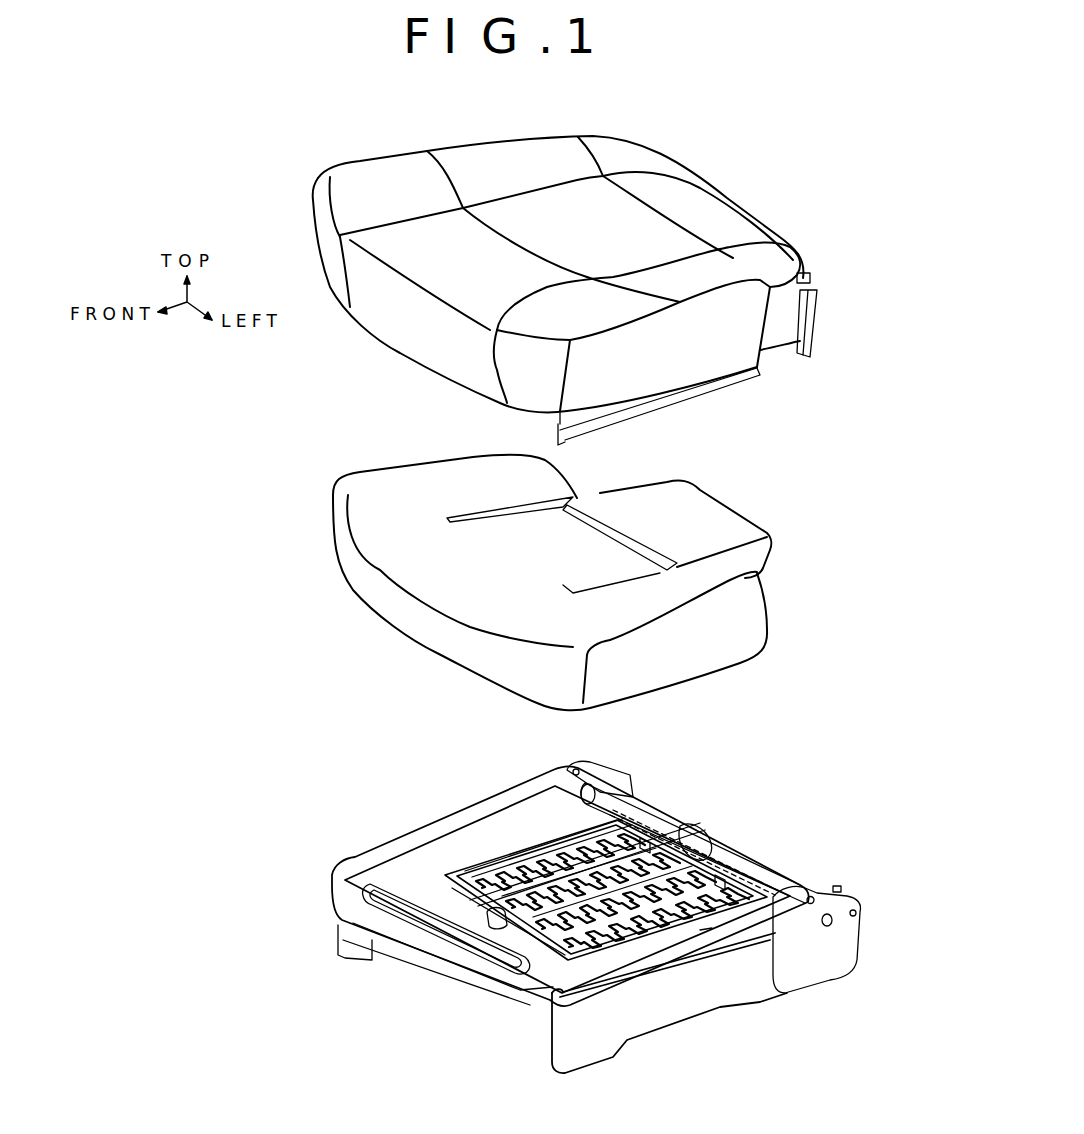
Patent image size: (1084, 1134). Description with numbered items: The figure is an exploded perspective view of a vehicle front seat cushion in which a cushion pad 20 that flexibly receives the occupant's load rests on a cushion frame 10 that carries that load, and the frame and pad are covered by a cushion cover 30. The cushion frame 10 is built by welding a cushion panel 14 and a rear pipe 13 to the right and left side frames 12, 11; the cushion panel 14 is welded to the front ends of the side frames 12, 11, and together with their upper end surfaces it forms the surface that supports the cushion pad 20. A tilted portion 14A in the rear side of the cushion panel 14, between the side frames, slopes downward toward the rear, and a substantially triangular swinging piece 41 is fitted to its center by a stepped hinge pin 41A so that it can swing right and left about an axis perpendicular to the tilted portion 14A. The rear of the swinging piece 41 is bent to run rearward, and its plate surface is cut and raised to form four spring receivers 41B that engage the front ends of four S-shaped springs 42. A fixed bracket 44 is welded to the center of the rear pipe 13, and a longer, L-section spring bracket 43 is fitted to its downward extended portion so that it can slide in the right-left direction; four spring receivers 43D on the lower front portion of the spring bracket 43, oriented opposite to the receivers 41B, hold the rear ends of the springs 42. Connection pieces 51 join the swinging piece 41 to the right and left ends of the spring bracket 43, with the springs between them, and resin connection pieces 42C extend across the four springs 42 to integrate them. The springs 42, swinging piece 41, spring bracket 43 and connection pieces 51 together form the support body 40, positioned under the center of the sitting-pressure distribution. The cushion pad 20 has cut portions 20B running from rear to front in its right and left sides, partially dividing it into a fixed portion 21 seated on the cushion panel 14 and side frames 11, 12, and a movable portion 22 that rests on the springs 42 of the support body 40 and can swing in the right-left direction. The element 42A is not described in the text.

The cushion frame 10 is at (566, 902).
The left side frame 11 is at (633, 1018).
The right side frame 12 is at (467, 827).
The rear pipe 13 is at (603, 793).
The cushion panel 14 is at (340, 863).
The tilted portion 14A is at (527, 943).
The cushion pad 20 is at (496, 559).
The cut portions 20B is at (600, 580).
The fixed portion 21 is at (393, 498).
The movable portion 22 is at (710, 513).
The cushion cover 30 is at (353, 200).
The support body 40 is at (591, 896).
The swinging piece 41 is at (440, 873).
The stepped hinge pin 41A is at (493, 937).
The spring receivers 41B is at (493, 877).
The S-shaped springs 42 is at (587, 830).
The connector 42A is at (477, 907).
The connection pieces 42C is at (718, 945).
The spring bracket 43 is at (757, 877).
The spring receivers 43D is at (650, 845).
The fixed bracket 44 is at (687, 833).
The connection pieces 51 is at (500, 863).